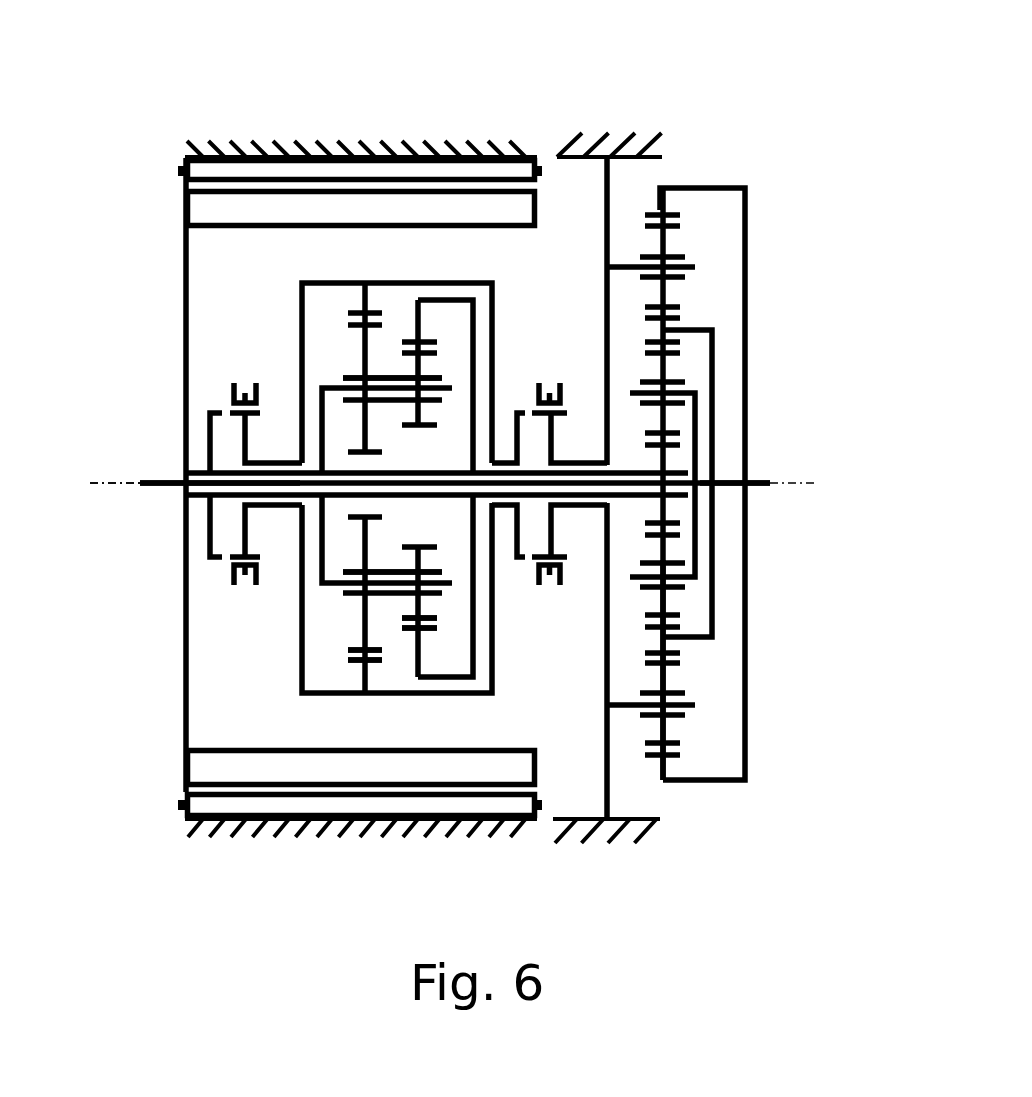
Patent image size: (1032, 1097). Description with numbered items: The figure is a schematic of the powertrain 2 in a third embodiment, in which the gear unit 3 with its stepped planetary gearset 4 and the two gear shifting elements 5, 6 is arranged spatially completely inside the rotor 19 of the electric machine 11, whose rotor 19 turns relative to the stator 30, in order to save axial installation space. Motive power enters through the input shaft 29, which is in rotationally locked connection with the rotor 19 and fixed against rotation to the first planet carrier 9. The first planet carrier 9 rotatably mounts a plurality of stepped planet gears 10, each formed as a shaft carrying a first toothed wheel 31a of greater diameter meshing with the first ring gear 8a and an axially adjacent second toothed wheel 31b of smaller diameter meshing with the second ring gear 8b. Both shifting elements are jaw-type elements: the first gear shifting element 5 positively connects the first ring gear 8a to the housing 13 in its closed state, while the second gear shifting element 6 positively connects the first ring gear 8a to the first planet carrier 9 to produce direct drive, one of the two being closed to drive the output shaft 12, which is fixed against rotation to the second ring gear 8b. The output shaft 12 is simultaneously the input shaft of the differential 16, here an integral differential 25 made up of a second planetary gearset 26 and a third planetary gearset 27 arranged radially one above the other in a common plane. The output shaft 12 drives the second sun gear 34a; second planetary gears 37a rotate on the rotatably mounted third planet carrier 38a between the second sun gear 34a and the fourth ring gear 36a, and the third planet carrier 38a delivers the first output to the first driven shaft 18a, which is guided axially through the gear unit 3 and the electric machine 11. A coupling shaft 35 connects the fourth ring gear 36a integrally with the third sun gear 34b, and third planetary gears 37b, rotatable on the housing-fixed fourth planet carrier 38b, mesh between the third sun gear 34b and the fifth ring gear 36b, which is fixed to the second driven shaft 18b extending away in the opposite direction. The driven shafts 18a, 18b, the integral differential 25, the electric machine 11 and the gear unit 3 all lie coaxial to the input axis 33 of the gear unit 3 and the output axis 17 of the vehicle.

The powertrain 2 is at (144, 102).
The gear unit 3 is at (283, 677).
The stepped planetary gearset 4 is at (397, 300).
The first gear shifting element 5 is at (528, 590).
The second gear shifting element 6 is at (232, 590).
The first ring gear 8a is at (352, 662).
The second ring gear 8b is at (405, 635).
The first planet carrier 9 is at (318, 390).
The stepped planet gear 10 is at (348, 373).
The electric machine 11 is at (155, 820).
The output shaft 12 is at (633, 471).
The housing 13 is at (200, 143).
The differential 16 is at (681, 166).
The output axis 17 is at (100, 487).
The first driven shaft 18a is at (150, 483).
The second driven shaft 18b is at (772, 496).
The rotor 19 is at (190, 204).
The integral differential 25 is at (708, 411).
The second planetary gearset 26 is at (636, 606).
The third planetary gearset 27 is at (714, 252).
The input shaft 29 is at (193, 497).
The stator 30 is at (180, 168).
The first toothed wheel 31a is at (358, 328).
The second toothed wheel 31b is at (432, 367).
The input axis 33 is at (189, 526).
The second sun gear 34a is at (672, 448).
The third sun gear 34b is at (678, 320).
The coupling shaft 35 is at (715, 630).
The fourth ring gear 36a is at (678, 342).
The fifth ring gear 36b is at (652, 757).
The second planetary gears 37a is at (667, 372).
The third planetary gears 37b is at (667, 730).
The third planet carrier 38a is at (695, 417).
The fourth planet carrier 38b is at (695, 703).